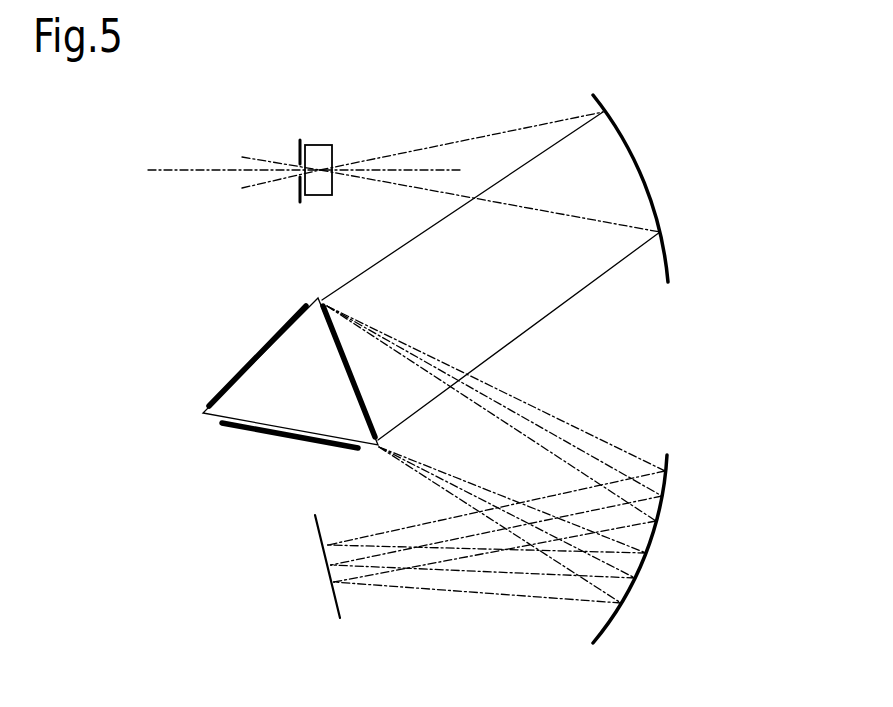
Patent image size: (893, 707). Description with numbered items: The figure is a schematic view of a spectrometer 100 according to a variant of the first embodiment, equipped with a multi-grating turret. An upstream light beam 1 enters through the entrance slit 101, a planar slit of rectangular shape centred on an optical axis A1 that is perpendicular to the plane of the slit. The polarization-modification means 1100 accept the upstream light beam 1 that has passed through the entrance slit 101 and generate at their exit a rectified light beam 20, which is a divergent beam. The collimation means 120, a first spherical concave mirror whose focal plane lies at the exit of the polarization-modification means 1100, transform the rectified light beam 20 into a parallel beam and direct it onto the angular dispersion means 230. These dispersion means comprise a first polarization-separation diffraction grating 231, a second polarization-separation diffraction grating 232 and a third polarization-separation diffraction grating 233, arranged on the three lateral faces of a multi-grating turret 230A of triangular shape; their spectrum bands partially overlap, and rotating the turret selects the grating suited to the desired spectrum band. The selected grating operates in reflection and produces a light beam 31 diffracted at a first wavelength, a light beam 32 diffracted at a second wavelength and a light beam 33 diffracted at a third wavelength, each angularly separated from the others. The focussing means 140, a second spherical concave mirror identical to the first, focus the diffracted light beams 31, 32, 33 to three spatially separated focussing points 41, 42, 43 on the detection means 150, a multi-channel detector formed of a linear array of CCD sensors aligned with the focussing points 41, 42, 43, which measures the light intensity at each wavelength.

The spectrometer 100 is at (778, 483).
The optical axis A1 is at (177, 169).
The upstream light beam 1 is at (258, 159).
The entrance slit 101 is at (298, 190).
The polarization-modification means 1100 is at (318, 145).
The rectified light beam 20 is at (478, 138).
The collimation means 120 is at (641, 165).
The angular dispersion means 230 is at (259, 380).
The multi-grating turret 230A is at (314, 297).
The first polarization-separation diffraction grating 231 is at (342, 357).
The second polarization-separation diffraction grating 232 is at (253, 352).
The third polarization-separation diffraction grating 233 is at (292, 431).
The light beam diffracted at wavelength λ1 31 is at (483, 487).
The light beam diffracted at wavelength λ2 32 is at (537, 507).
The light beam diffracted at wavelength λ3 33 is at (567, 556).
The focussing means 140 is at (617, 621).
The detection means 150 is at (335, 597).
The first focussing point 41 is at (323, 550).
The second focussing point 42 is at (329, 566).
The third focussing point 43 is at (335, 580).